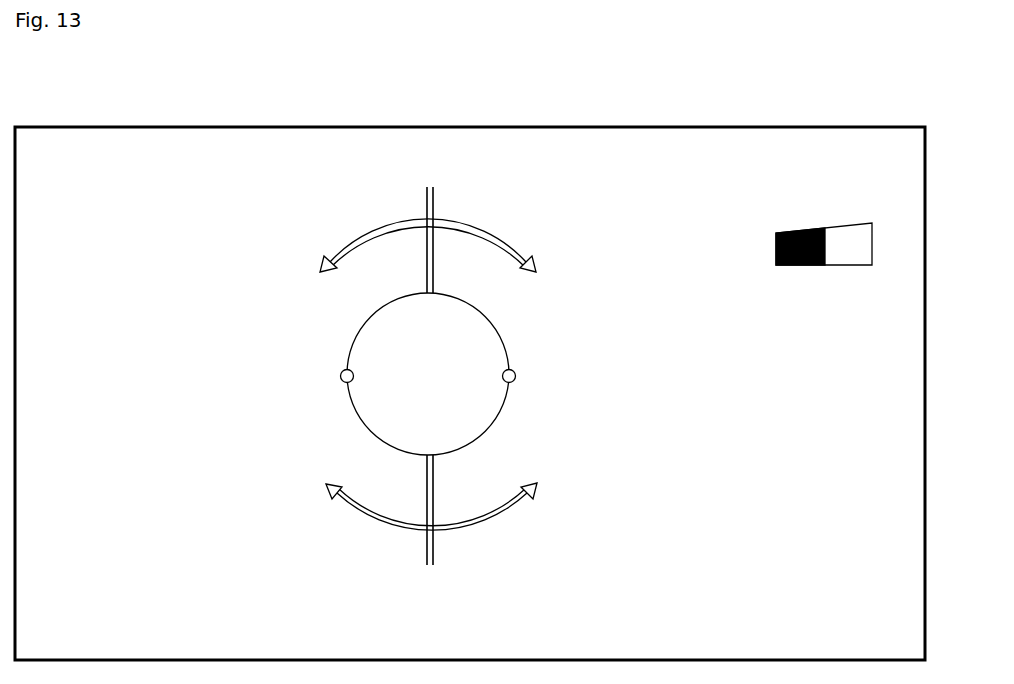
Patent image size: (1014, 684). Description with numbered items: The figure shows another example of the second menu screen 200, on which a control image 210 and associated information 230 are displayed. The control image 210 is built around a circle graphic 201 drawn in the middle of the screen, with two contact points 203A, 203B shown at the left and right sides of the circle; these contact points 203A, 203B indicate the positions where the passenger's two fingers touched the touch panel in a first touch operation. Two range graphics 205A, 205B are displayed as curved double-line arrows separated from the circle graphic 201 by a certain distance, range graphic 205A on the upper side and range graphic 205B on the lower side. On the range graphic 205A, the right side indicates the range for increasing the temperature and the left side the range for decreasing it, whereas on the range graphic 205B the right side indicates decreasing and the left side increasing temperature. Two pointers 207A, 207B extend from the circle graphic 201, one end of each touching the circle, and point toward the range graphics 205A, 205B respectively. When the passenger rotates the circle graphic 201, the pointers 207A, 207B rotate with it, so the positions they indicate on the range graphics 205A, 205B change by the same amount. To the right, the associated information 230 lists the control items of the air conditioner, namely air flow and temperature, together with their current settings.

The second menu screen 200 is at (610, 127).
The control image 210 is at (402, 352).
The circle graphic 201 is at (500, 328).
The contact point 203A is at (340, 377).
The contact point 203B is at (516, 377).
The range graphic 205A is at (324, 272).
The range graphic 205B is at (338, 489).
The pointer 207A is at (430, 195).
The pointer 207B is at (430, 565).
The associated information 230 is at (818, 196).